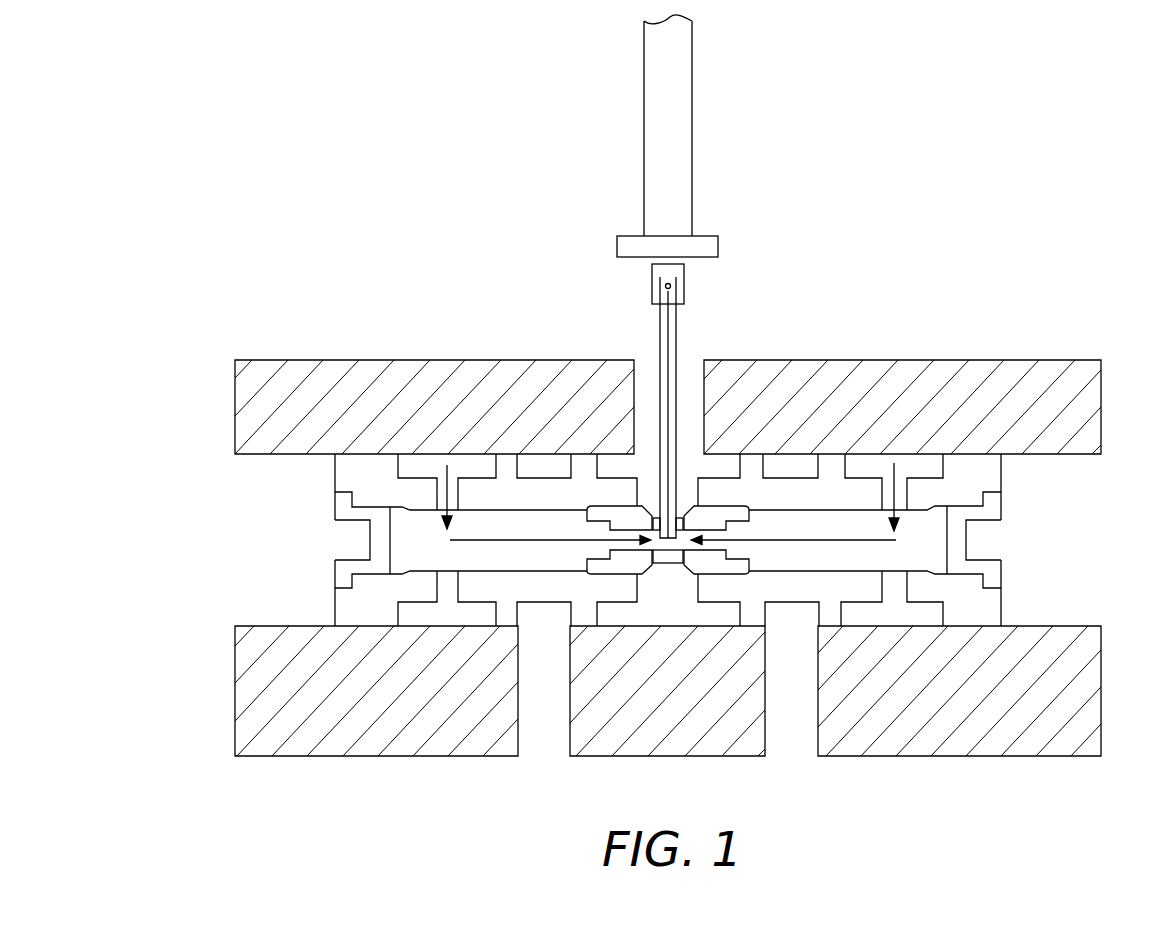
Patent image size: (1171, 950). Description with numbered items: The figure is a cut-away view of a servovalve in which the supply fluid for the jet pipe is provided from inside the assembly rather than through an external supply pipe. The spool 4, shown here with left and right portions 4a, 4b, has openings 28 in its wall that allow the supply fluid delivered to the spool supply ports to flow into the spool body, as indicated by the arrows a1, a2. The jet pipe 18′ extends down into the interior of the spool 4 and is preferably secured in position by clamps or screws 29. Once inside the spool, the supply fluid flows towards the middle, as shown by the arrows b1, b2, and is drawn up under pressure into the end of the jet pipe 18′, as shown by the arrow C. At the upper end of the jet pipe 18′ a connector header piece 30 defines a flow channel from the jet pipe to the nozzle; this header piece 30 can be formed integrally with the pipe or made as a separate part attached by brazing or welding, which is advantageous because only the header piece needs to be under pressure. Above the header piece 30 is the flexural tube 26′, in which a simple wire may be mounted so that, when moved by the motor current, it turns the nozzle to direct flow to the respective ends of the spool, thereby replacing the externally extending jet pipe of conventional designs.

The flexural tube 26′ is at (644, 112).
The connector header piece 30 is at (686, 281).
The arrow c C is at (668, 316).
The jet pipe 18′ is at (660, 329).
The openings 28 is at (455, 480).
The clamps or screws 29 is at (708, 518).
The spool 4 is at (930, 549).
The left housing part 4a is at (245, 579).
The right housing part 4b is at (1087, 576).
The arrow a1 is at (451, 499).
The arrow a2 is at (893, 497).
The arrow b1 is at (543, 540).
The arrow b2 is at (788, 540).